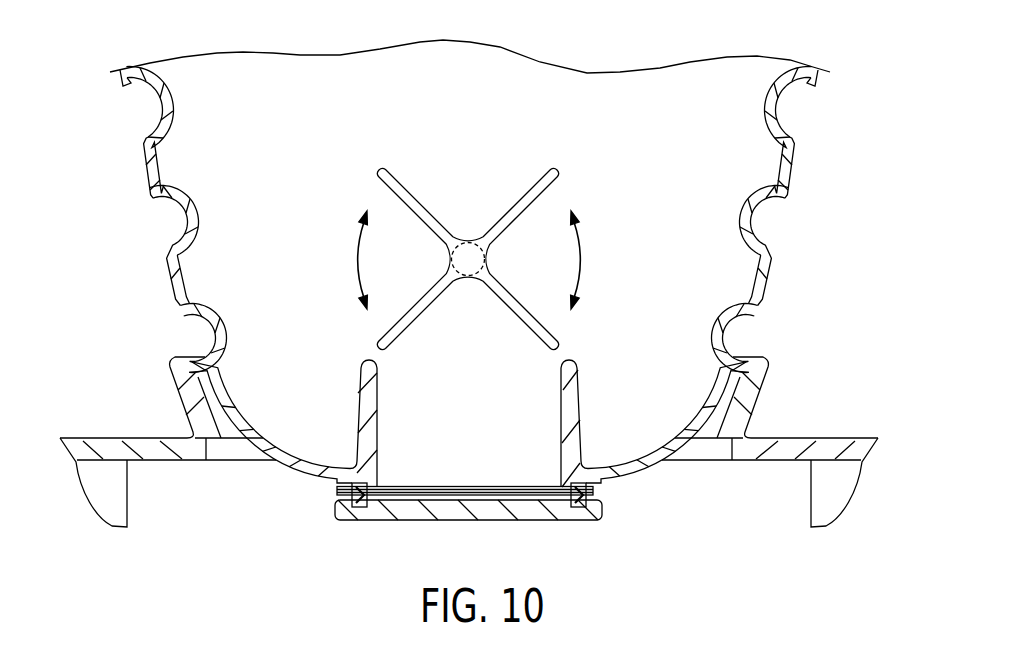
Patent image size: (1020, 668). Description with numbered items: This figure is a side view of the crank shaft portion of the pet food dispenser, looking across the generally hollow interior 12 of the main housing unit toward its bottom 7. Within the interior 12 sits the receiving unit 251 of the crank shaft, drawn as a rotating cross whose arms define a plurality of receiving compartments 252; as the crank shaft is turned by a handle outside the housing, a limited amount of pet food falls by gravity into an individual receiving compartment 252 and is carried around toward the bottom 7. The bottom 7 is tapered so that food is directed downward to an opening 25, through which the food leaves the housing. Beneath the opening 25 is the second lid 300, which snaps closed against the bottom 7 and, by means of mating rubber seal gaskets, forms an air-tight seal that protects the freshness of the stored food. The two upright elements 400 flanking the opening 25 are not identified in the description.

The bottom 7 is at (640, 477).
The generally hollow interior 12 is at (661, 76).
The opening 25 is at (483, 482).
The receiving unit 251 is at (552, 181).
The receiving compartments 252 is at (466, 236).
The second lid 300 is at (468, 520).
The support posts 400 is at (363, 407).